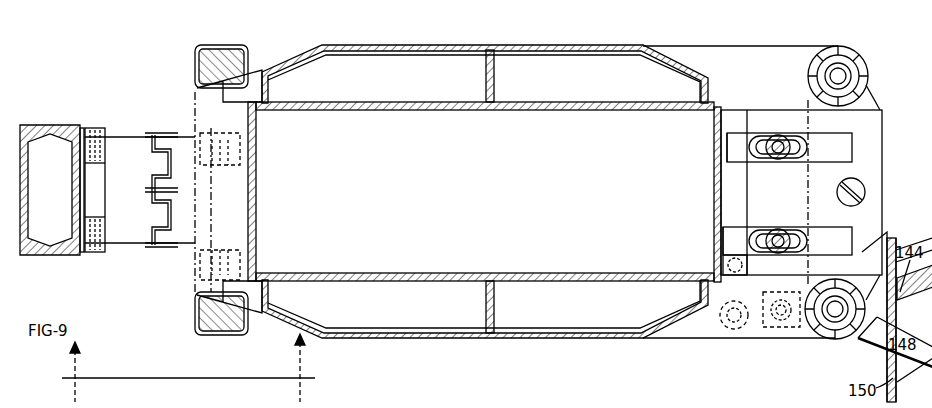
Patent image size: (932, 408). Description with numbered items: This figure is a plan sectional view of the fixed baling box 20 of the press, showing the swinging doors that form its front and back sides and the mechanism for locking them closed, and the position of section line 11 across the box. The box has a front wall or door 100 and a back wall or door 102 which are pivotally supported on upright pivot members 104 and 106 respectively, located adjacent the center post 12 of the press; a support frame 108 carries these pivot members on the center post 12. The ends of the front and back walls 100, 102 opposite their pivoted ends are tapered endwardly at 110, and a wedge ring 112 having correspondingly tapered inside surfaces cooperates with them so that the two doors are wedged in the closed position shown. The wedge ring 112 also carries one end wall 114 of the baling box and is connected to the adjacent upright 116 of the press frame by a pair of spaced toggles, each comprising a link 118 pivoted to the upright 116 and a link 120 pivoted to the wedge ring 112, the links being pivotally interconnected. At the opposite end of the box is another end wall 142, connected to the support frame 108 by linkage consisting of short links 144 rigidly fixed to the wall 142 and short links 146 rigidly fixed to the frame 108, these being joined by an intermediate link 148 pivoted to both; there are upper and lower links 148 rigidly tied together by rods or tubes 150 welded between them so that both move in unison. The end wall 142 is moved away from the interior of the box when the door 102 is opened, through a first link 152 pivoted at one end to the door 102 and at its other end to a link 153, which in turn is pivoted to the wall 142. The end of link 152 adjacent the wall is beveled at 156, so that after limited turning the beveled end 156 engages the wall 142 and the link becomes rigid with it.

The section line 11- 11 is at (188, 371).
The center post 12 is at (866, 198).
The baling box 20 is at (475, 214).
The front wall 100 is at (556, 111).
The back wall 102 is at (536, 277).
The upright pivot member 104 is at (847, 77).
The upright pivot member 106 is at (838, 319).
The support frame 108 is at (872, 135).
The tapered end 110 is at (228, 92).
The wedge ring 112 is at (195, 65).
The end wall 114 is at (257, 167).
The upright 116 is at (40, 252).
The link 118 is at (118, 238).
The link 120 is at (182, 246).
The end wall 142 is at (714, 187).
The short link 144 is at (731, 143).
The short link 146 is at (848, 150).
The intermediate link 148 is at (778, 136).
The rod or tube 150 is at (776, 161).
The first link 152 is at (722, 312).
The link 153 is at (755, 342).
The beveled end 156 is at (724, 254).